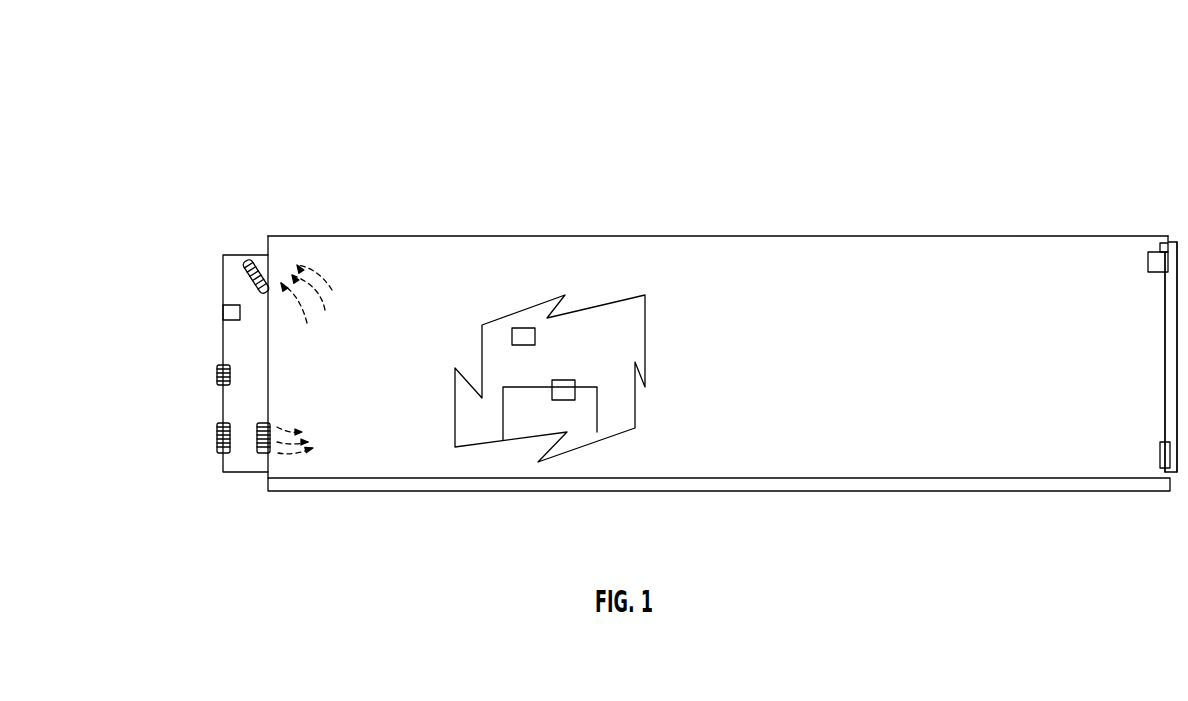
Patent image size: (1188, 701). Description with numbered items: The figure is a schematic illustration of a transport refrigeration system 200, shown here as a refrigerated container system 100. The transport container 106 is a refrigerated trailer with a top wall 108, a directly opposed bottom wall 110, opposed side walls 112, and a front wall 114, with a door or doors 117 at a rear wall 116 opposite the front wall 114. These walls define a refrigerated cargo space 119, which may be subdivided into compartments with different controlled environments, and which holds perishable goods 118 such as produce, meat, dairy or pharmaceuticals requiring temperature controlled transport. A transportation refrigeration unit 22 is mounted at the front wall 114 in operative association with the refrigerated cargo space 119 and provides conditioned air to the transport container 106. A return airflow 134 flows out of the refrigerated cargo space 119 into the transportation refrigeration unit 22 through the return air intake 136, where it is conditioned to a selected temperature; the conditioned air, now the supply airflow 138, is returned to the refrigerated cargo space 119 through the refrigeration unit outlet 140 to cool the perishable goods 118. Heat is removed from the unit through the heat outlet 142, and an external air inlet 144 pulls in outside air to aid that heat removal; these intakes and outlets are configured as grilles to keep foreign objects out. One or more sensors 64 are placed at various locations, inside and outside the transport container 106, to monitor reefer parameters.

The refrigerated container system 100 is at (165, 120).
The transport refrigeration system 200 is at (258, 208).
The transportation refrigeration unit 22 is at (220, 258).
The return air intake 136 is at (262, 272).
The top wall 108 is at (418, 236).
The transport container 106 is at (986, 236).
The sensors 64 is at (222, 315).
The external air inlet 144 is at (220, 375).
The heat outlet 142 is at (217, 438).
The refrigeration unit outlet 140 is at (263, 423).
The front wall 114 is at (268, 374).
The supply airflow 138 is at (315, 448).
The return airflow 134 is at (330, 280).
The refrigerated cargo space 119 is at (617, 343).
The perishable goods 118 is at (503, 413).
The side walls 112 is at (575, 363).
The bottom wall 110 is at (774, 478).
The rear wall 116 is at (1165, 318).
The doors 117 is at (1164, 372).